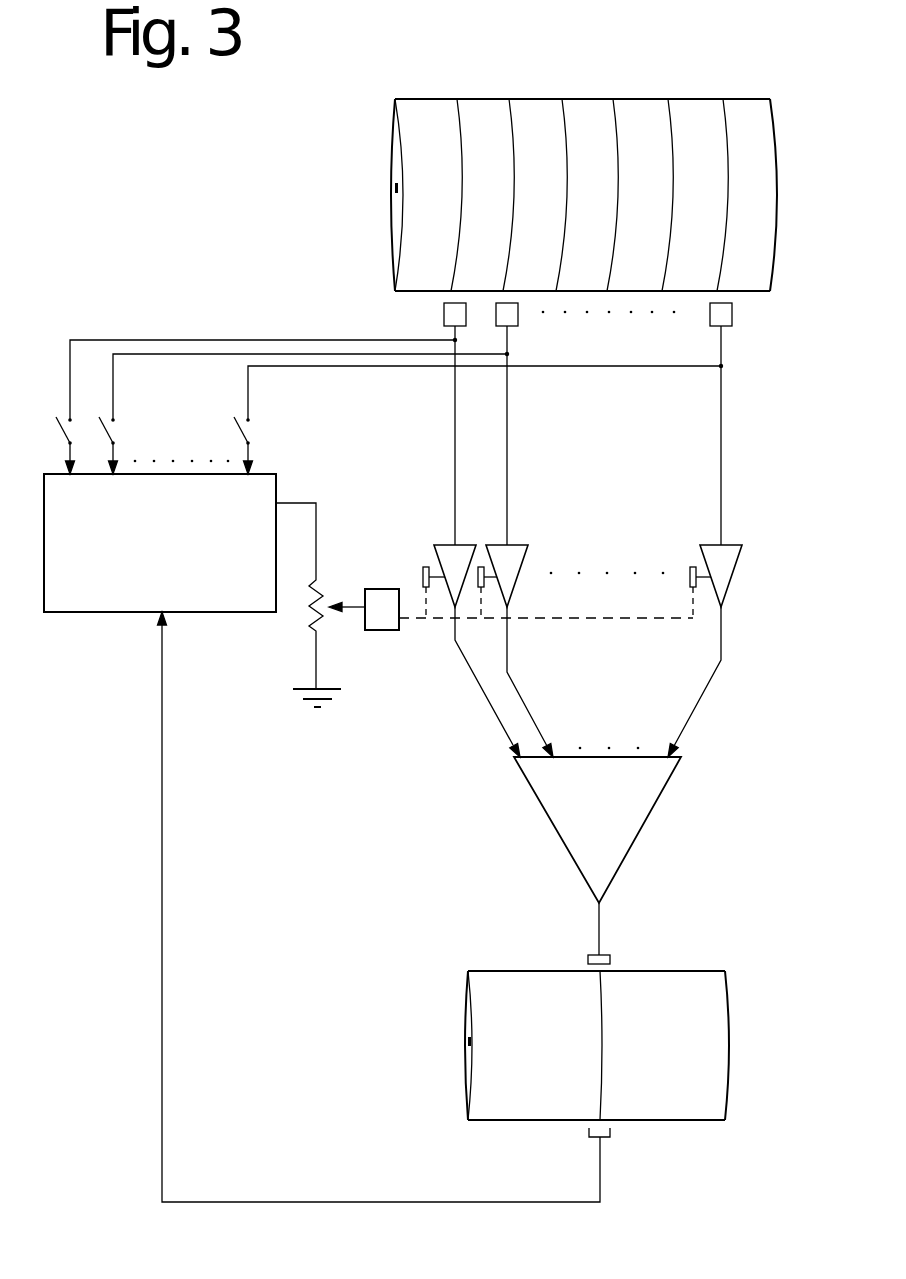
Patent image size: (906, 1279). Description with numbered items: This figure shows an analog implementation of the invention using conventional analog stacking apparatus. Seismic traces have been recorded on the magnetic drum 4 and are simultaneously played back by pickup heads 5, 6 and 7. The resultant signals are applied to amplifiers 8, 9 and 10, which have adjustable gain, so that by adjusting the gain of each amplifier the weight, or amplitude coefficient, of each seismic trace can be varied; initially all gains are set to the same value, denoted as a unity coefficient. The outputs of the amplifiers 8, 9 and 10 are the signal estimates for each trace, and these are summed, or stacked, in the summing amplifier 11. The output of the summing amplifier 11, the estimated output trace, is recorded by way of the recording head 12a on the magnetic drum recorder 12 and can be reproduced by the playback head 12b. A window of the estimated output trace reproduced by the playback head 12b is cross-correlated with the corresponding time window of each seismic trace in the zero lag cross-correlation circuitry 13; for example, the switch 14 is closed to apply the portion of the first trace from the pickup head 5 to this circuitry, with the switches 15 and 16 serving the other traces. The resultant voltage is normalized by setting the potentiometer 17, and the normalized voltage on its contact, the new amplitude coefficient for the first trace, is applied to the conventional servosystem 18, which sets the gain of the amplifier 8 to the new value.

The magnetic drum 4 is at (390, 118).
The pickup head 5 is at (444, 320).
The pickup head 6 is at (496, 320).
The pickup head 7 is at (732, 320).
The amplifier 8 is at (448, 545).
The amplifier 9 is at (500, 545).
The amplifier 10 is at (712, 545).
The summing amplifier 11 is at (656, 801).
The magnetic drum recorder 12 is at (678, 971).
The recording head 12a is at (603, 953).
The playback head 12b is at (612, 1130).
The zero lag cross-correlation circuitry 13 is at (78, 617).
The switch 14 is at (56, 437).
The switch 15 is at (105, 437).
The switch 16 is at (243, 437).
The potentiometer 17 is at (326, 592).
The servosystem 18 is at (398, 590).